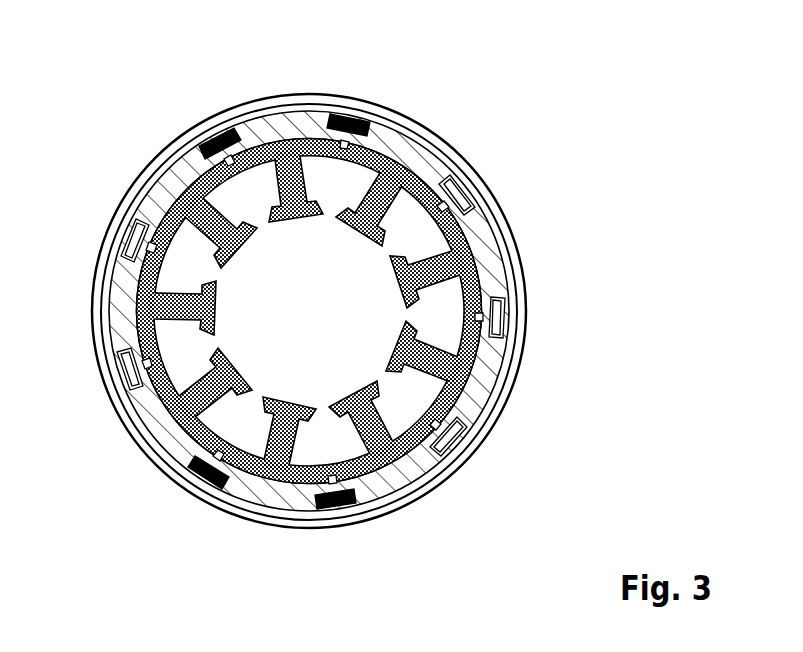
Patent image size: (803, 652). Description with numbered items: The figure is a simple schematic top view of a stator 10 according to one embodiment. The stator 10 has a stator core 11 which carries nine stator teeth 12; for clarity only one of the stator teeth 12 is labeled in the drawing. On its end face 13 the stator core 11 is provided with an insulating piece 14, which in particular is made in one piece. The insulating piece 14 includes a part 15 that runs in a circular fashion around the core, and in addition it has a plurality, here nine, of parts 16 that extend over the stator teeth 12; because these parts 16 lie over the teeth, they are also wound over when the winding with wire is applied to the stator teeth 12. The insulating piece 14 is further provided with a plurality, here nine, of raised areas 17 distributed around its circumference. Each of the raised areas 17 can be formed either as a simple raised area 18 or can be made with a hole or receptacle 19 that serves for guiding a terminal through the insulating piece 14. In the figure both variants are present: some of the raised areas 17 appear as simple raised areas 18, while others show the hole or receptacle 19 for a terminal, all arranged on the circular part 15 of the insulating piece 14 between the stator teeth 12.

The stator 10 is at (494, 88).
The stator core 11 is at (502, 196).
The stator teeth 12 is at (388, 158).
The end face 13 is at (146, 170).
The insulating piece 14 is at (160, 448).
The part that runs in a circular fashion 15 is at (228, 508).
The parts extending over stator teeth 16 is at (288, 408).
The raised areas 17 is at (340, 347).
The simple raised area 18 is at (340, 512).
The hole or receptacle 19 is at (458, 447).